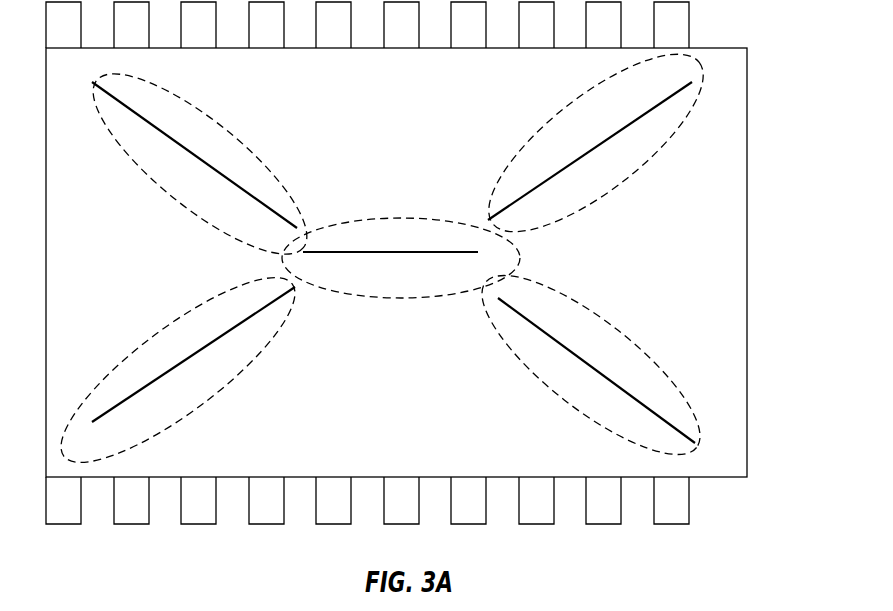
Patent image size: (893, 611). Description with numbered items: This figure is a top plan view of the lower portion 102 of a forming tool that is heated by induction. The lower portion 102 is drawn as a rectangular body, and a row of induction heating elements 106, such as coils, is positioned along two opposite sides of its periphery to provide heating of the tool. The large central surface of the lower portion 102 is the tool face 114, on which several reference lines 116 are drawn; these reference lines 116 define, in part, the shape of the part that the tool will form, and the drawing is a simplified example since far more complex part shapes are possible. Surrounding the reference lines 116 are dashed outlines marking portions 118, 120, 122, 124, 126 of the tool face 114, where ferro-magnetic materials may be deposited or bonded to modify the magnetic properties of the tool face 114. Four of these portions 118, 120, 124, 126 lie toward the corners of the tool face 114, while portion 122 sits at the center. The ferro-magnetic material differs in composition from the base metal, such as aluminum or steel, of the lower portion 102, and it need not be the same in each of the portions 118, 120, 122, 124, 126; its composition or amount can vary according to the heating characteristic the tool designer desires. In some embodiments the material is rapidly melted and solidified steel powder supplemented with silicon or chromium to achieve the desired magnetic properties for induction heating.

The lower portion 102 is at (748, 305).
The induction heating elements 106 is at (689, 500).
The tool face 114 is at (735, 115).
The reference lines 116 is at (230, 180).
The portion 118 is at (185, 423).
The portion 120 is at (578, 415).
The portion 122 is at (398, 300).
The portion 124 is at (588, 200).
The portion 126 is at (205, 222).